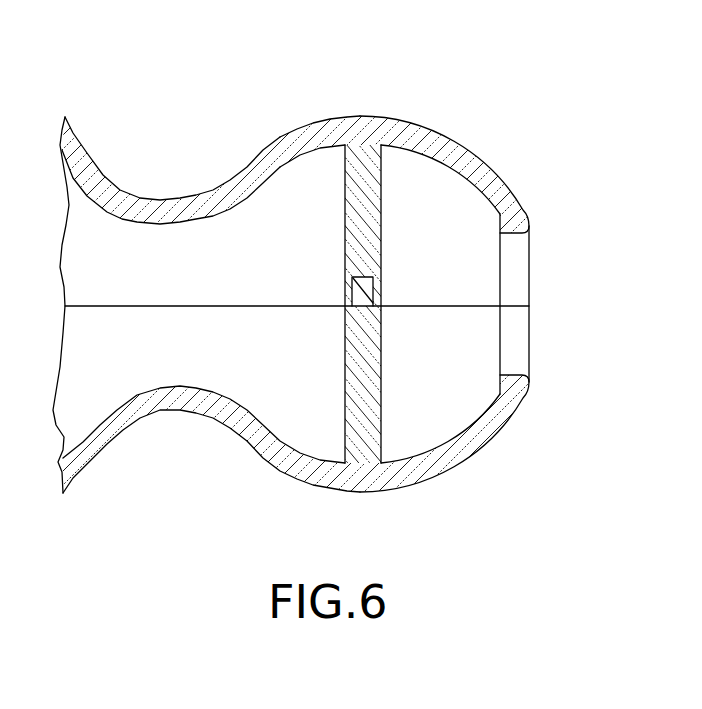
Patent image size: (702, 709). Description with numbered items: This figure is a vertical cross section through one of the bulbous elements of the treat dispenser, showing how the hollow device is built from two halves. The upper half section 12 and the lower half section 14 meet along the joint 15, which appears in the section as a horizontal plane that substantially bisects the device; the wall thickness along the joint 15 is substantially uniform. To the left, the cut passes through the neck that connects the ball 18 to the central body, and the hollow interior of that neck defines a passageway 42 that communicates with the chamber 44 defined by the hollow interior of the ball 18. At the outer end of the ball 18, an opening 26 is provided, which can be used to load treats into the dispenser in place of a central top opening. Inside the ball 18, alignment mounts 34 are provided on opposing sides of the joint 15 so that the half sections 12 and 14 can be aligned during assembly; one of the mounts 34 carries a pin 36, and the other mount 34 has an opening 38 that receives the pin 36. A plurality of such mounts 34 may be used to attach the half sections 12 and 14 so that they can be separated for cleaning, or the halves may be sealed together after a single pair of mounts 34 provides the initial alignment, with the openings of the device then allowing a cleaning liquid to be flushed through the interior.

The upper half section 12 is at (158, 113).
The lower half section 14 is at (122, 483).
The joint 15 is at (215, 306).
The bulbous element 18 is at (445, 143).
The opening 26 is at (525, 263).
The alignment mount 34 is at (373, 190).
The pin 36 is at (357, 289).
The opening 38 is at (355, 288).
The passageway 42 is at (155, 243).
The chamber 44 is at (313, 185).